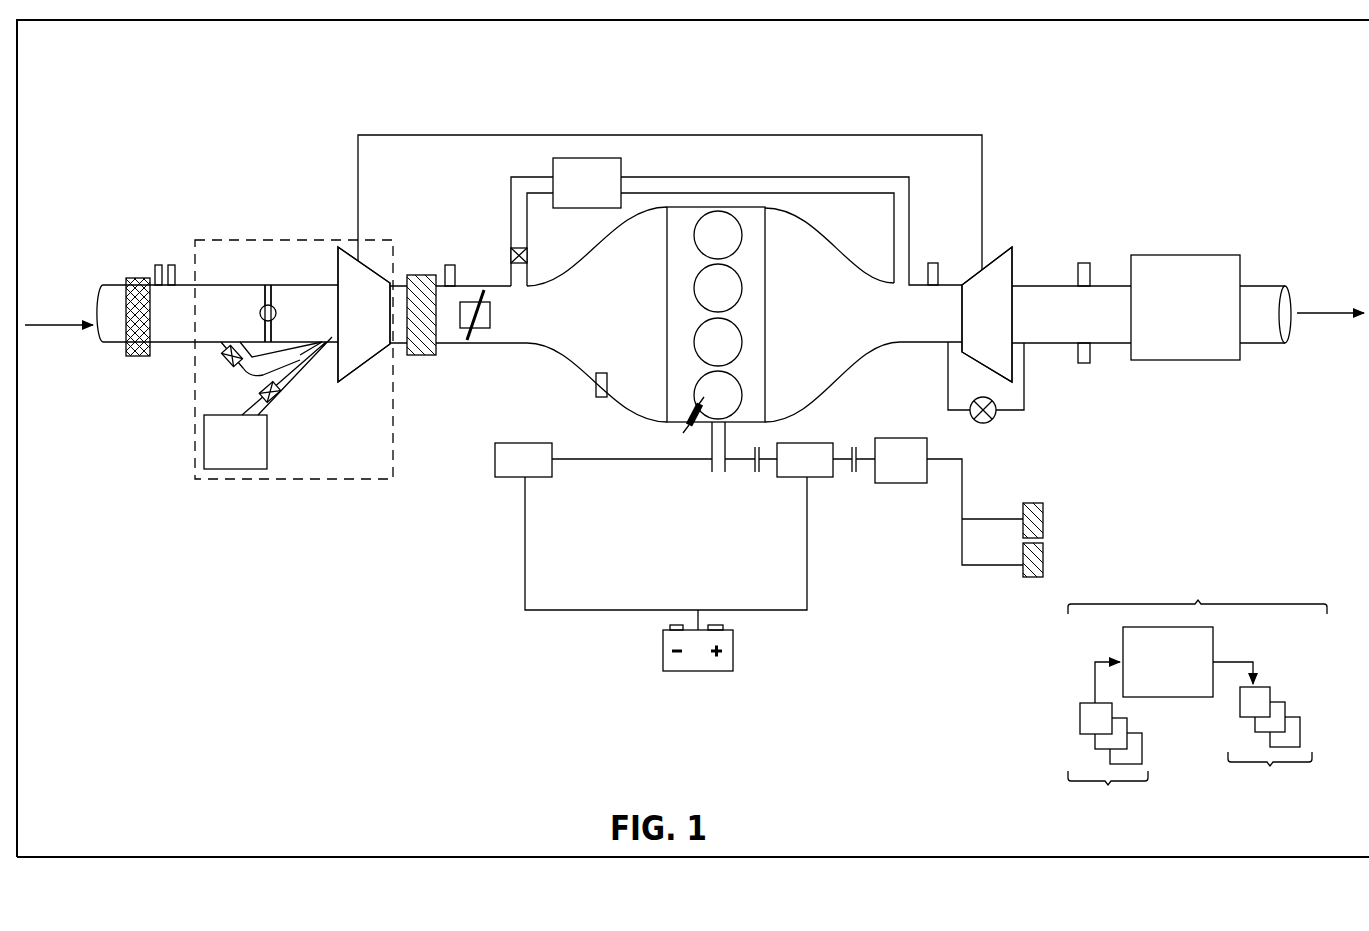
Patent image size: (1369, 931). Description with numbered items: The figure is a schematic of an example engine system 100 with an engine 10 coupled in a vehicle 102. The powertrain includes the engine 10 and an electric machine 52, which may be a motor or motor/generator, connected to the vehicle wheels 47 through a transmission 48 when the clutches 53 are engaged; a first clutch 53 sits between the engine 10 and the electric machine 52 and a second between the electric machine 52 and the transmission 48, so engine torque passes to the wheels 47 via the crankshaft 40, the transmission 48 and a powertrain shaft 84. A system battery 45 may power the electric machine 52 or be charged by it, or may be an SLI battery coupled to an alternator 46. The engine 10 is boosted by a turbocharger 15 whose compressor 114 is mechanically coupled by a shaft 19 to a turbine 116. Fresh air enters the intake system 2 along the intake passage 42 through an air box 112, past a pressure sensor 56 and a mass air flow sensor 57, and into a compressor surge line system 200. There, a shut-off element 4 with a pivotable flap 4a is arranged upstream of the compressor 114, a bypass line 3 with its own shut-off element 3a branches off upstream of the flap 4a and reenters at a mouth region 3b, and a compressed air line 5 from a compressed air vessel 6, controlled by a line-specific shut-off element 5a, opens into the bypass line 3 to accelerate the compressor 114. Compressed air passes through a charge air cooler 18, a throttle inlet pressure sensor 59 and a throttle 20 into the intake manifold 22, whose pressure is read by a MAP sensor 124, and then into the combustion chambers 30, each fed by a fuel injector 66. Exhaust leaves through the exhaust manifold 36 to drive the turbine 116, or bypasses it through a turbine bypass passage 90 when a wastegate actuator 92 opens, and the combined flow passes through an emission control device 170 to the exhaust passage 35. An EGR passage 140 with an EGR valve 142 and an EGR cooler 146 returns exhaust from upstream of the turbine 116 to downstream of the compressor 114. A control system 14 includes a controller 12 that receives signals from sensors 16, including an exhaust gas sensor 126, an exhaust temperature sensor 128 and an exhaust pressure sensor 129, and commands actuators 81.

The intake system 2 is at (146, 181).
The bypass line 3 is at (248, 378).
The shut-off element 3a is at (228, 350).
The mouth region 3b is at (330, 333).
The shut-off element 4 is at (254, 310).
The pivotable flap 4a is at (276, 305).
The compressed air line 5 is at (297, 382).
The line-specific shut-off element 5a is at (276, 400).
The compressed air vessel 6 is at (235, 442).
The engine 10 is at (767, 296).
The controller 12 is at (1168, 662).
The control system 14 is at (1197, 585).
The turbocharger 15 is at (386, 224).
The sensors 16 is at (1108, 743).
The charge air cooler 18 is at (421, 274).
The shaft 19 is at (862, 135).
The throttle 20 is at (490, 323).
The intake manifold 22 is at (597, 314).
The combustion chambers 30 is at (736, 228).
The exhaust passage 35 is at (1262, 286).
The exhaust manifold 36 is at (863, 315).
The crankshaft 40 is at (712, 465).
The intake passage 42 is at (111, 345).
The system battery 45 is at (698, 672).
The alternator 46 is at (495, 470).
The vehicle wheels 47 is at (1022, 510).
The transmission 48 is at (901, 460).
The electric machine 52 is at (795, 478).
The clutches 53 is at (843, 446).
The pressure sensor 56 is at (172, 264).
The mass air flow sensor 57 is at (158, 264).
The throttle inlet pressure sensor 59 is at (450, 264).
The fuel injector 66 is at (680, 434).
The actuators 81 is at (1262, 734).
The powertrain shaft 84 is at (938, 462).
The turbine bypass passage 90 is at (947, 408).
The wastegate actuator 92 is at (988, 423).
The engine system 100 is at (1192, 94).
The vehicle 102 is at (1290, 22).
The air box 112 is at (126, 277).
The compressor 114 is at (372, 314).
The turbine 116 is at (987, 314).
The manifold absolute pressure sensor 124 is at (596, 378).
The exhaust gas sensor 126 is at (933, 262).
The exhaust temperature sensor 128 is at (1085, 364).
The exhaust pressure sensor 129 is at (1085, 262).
The EGR passage 140 is at (790, 177).
The EGR valve 142 is at (529, 256).
The EGR cooler 146 is at (587, 183).
The emission control device 170 is at (1172, 254).
The compressor surge line system 200 is at (228, 240).